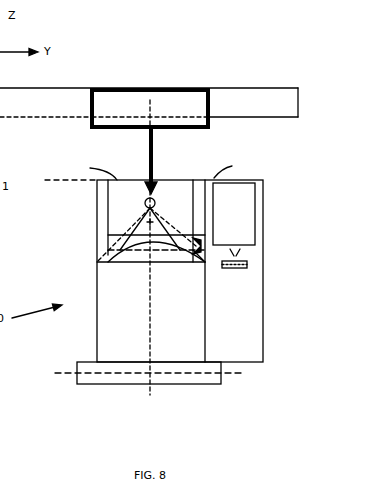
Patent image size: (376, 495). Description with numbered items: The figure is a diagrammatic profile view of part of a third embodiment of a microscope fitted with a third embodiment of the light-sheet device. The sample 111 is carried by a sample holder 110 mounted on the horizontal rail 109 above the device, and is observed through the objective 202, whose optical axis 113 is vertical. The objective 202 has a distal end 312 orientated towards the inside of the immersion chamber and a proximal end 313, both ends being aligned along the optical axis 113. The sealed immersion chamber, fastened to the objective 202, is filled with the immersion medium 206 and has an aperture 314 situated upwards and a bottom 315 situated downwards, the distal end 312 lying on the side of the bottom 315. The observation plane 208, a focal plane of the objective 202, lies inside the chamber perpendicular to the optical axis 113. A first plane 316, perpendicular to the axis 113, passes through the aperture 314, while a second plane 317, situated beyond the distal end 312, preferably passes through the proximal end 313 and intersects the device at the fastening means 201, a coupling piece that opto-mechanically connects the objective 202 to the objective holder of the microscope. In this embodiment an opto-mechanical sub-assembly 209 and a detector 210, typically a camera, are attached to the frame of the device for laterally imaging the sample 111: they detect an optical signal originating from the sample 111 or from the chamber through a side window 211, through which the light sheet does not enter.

The rail 109 is at (77, 82).
The sample holder 110 is at (220, 128).
The sample 111 is at (144, 184).
The fastening means 201 is at (207, 394).
The objective 202 is at (96, 371).
The immersion medium 206 is at (232, 166).
The observation plane 208 is at (178, 176).
The opto-mechanical sub-assembly 209 is at (270, 216).
The detector 210 is at (250, 277).
The side window 211 is at (198, 252).
The optical axis 113 is at (136, 404).
The distal end 312 is at (97, 250).
The proximal end 313 is at (125, 362).
The aperture 314 is at (92, 169).
The bottom 315 is at (108, 262).
The first plane 316 is at (67, 182).
The second plane 317 is at (233, 375).